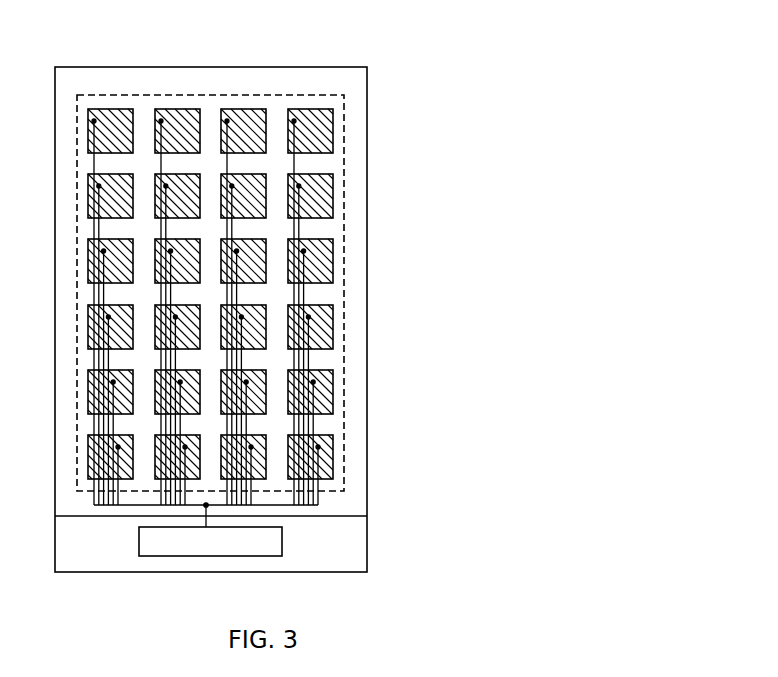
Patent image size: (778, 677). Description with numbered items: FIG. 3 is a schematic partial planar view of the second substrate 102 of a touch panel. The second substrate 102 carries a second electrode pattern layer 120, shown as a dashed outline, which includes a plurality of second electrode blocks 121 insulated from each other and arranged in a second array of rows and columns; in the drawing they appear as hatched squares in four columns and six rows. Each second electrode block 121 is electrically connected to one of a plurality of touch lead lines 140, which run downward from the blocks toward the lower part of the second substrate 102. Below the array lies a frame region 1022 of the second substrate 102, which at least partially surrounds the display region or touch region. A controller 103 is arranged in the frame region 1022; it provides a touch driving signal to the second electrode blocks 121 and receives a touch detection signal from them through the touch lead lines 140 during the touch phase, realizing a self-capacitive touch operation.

The second substrate 102 is at (437, 37).
The frame region 1022 is at (353, 533).
The second electrode pattern layer 120 is at (344, 137).
The second electrode block 121 is at (318, 260).
The touch lead line 140 is at (311, 356).
The controller 103 is at (210, 541).